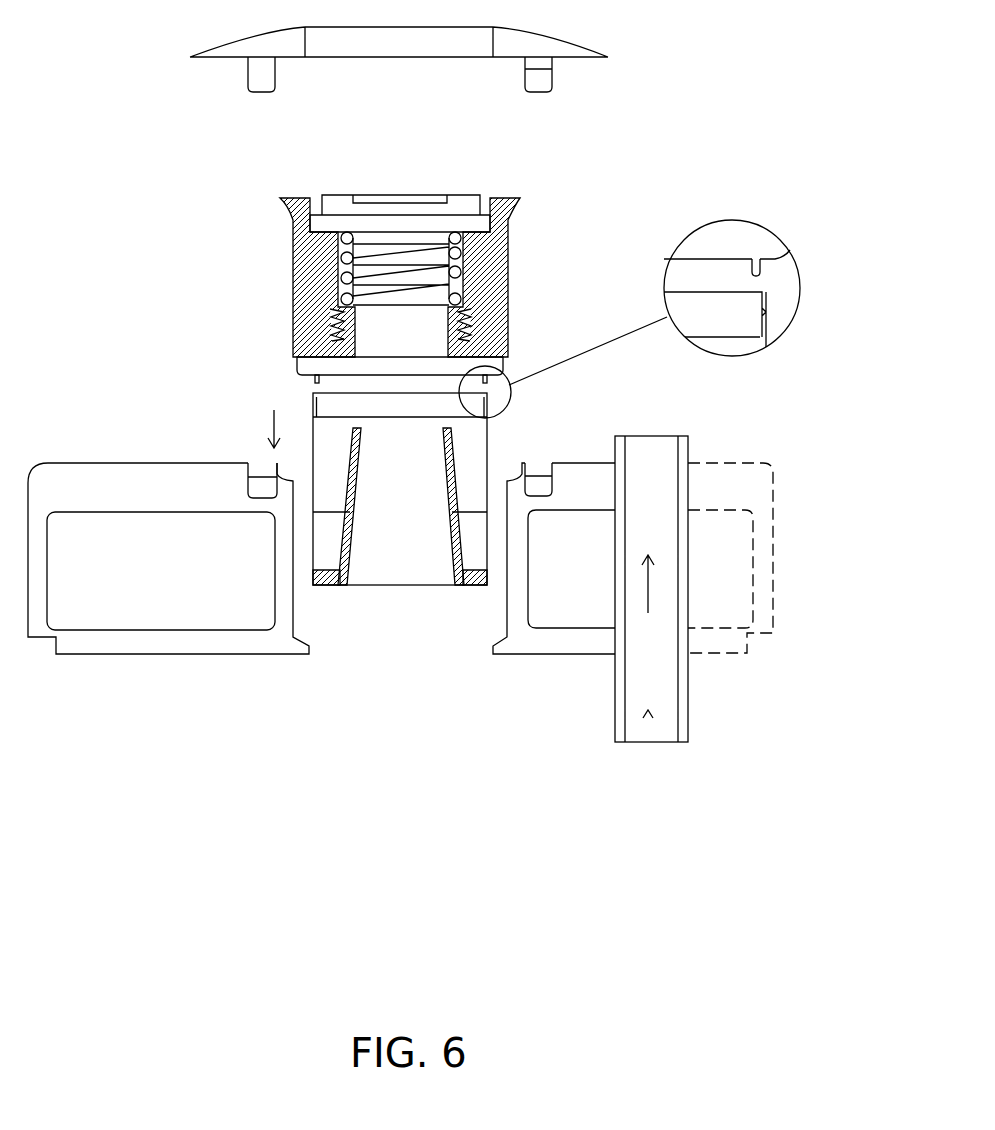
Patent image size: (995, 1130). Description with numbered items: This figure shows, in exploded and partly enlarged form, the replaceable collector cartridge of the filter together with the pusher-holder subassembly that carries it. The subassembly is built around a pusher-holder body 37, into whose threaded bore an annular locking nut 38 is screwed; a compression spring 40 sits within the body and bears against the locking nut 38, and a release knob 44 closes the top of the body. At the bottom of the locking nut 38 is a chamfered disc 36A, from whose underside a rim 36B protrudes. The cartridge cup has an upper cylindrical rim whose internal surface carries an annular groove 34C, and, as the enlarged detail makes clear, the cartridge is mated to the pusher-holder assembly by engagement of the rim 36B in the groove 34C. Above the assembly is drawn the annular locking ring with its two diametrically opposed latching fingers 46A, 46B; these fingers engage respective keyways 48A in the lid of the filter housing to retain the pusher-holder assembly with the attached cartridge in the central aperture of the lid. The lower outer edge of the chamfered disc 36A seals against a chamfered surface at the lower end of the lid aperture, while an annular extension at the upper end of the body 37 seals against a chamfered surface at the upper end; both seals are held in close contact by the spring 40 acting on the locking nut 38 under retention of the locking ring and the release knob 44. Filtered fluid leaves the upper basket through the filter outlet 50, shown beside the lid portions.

The annular groove 34C is at (511, 392).
The chamfered disc 36A is at (337, 367).
The rim 36B is at (315, 382).
The pusher-holder body 37 is at (508, 327).
The annular locking nut 38 is at (345, 337).
The compression spring 40 is at (462, 248).
The release knob 44 is at (400, 192).
The latching finger 46A is at (260, 92).
The latching finger 46B is at (533, 88).
The keyway 48A is at (248, 463).
The filter outlet 50 is at (658, 459).